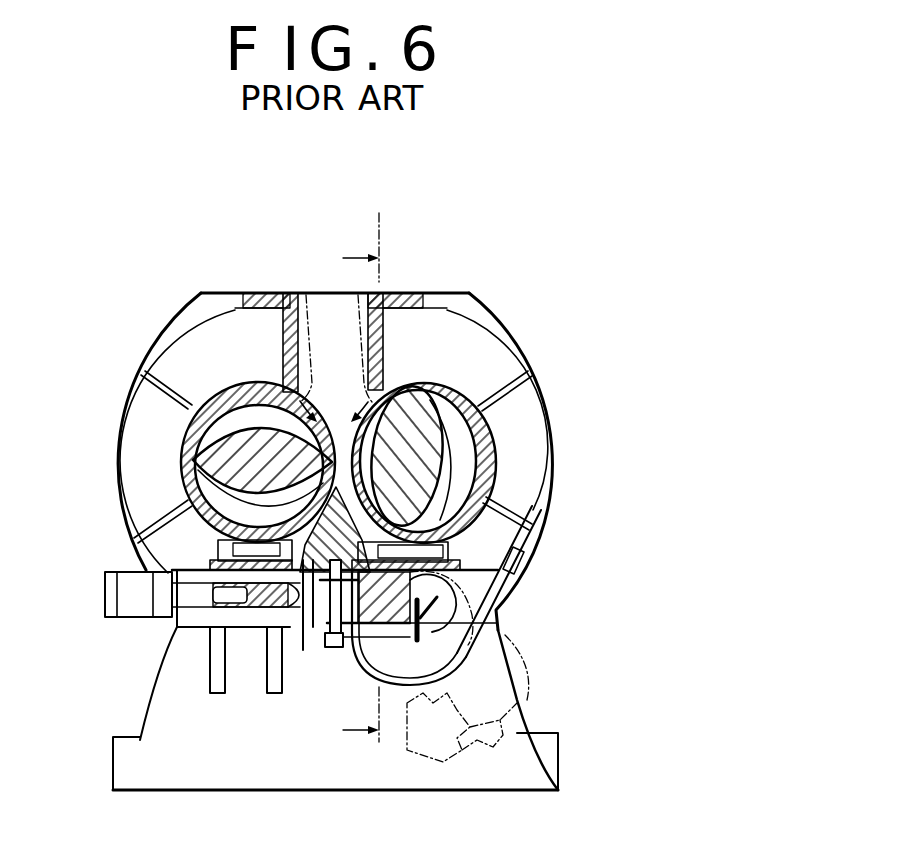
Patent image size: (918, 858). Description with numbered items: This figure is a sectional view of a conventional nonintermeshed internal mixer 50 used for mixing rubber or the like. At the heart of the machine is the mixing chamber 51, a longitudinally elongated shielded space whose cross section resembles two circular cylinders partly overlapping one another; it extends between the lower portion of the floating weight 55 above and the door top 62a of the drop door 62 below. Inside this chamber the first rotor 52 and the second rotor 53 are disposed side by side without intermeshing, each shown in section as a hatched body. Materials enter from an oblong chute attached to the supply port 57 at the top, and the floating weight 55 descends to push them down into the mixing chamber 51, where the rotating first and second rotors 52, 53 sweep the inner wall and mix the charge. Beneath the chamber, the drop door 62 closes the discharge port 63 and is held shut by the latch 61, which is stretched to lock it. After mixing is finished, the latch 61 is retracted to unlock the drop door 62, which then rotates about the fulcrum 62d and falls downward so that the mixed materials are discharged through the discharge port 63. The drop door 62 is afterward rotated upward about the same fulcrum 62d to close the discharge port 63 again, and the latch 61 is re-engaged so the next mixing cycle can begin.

The nonintermeshed internal mixer 50 is at (465, 240).
The mixing chamber 51 is at (443, 407).
The first rotor 52 is at (203, 458).
The second rotor 53 is at (427, 457).
The floating weight 55 is at (347, 293).
The supply port 57 is at (305, 293).
The latch 61 is at (235, 605).
The drop door 62 is at (322, 627).
The door top 62a is at (365, 515).
The fulcrum 62d is at (430, 617).
The discharge port 63 is at (305, 607).